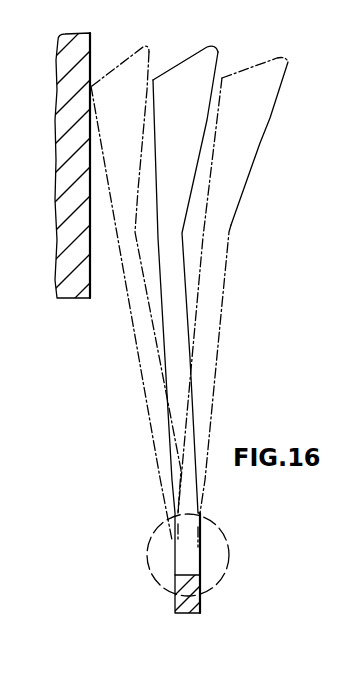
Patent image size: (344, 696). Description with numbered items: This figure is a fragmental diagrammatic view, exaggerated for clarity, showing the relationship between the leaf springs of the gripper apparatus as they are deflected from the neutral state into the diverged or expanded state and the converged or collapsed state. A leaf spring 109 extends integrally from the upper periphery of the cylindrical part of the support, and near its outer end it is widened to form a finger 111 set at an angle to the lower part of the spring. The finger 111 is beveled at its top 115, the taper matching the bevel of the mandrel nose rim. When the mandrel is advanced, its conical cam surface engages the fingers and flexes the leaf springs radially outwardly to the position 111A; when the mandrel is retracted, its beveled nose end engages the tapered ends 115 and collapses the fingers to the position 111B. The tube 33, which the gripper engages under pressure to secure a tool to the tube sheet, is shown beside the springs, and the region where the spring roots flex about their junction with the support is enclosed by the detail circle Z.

The tube 33 is at (66, 298).
The diverged position of finger 111A is at (107, 74).
The leaf spring 109 is at (147, 45).
The finger 111 is at (221, 48).
The beveled top of finger 115 is at (162, 68).
The converged position of finger 111B is at (280, 86).
The detail circle Z is at (147, 561).